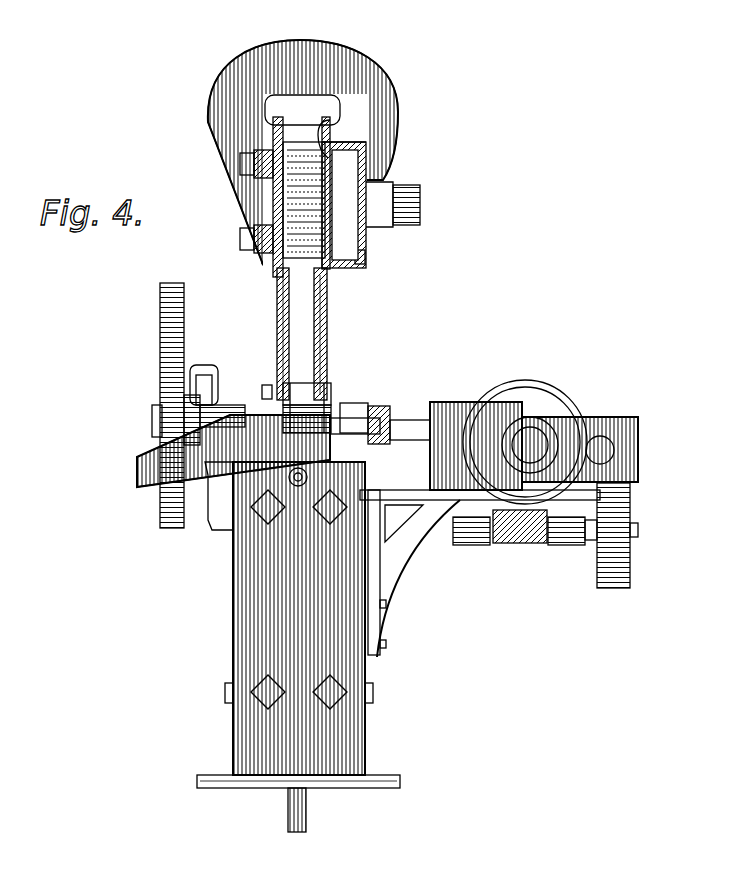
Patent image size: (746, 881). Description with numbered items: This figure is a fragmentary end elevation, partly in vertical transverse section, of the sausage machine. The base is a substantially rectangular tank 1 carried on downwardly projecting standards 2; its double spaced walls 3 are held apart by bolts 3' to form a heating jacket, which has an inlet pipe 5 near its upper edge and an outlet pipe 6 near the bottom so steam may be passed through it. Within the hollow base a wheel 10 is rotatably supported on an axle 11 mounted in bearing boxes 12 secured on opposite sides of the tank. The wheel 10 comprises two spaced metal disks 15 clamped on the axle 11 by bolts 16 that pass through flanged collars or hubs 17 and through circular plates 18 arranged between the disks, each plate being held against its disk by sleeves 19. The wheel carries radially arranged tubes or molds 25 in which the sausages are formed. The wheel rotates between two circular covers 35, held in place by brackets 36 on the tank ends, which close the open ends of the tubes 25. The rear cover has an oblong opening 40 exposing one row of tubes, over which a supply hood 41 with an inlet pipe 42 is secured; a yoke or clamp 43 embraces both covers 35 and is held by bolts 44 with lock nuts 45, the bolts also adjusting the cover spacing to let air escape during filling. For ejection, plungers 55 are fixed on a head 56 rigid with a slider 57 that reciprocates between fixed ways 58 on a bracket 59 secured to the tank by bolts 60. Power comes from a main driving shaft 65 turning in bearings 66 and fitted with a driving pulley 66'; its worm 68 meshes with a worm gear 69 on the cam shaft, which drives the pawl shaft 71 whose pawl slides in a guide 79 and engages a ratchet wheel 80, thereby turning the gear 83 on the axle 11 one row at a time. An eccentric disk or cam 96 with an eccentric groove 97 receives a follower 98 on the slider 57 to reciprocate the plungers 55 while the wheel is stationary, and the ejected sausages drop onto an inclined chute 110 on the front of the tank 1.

The tank 1 is at (212, 632).
The standards 2 is at (398, 777).
The double spaced walls 3 is at (297, 610).
The bolts 3' is at (295, 691).
The inlet pipe 5 is at (302, 484).
The outlet pipe 6 is at (306, 815).
The wheel 10 is at (340, 102).
The axle 11 is at (152, 420).
The bearing boxes 12 is at (232, 412).
The disks 15 is at (282, 270).
The bolts 16 is at (265, 388).
The flanged collars or hubs 17 is at (345, 416).
The circular plates 18 is at (278, 336).
The sleeves 19 is at (312, 388).
The tubes or molds 25 is at (285, 128).
The circular covers 35 is at (275, 140).
The brackets 36 is at (298, 464).
The oblong opening 40 is at (340, 186).
The supply hood 41 is at (345, 132).
The inlet pipe 42 is at (420, 206).
The yoke or clamp 43 is at (325, 68).
The bolts or set screws 44 is at (240, 156).
The lock nuts 45 is at (254, 164).
The plungers 55 is at (380, 404).
The head 56 is at (410, 420).
The slider 57 is at (638, 440).
The fixed ways 58 is at (448, 404).
The bracket 59 is at (380, 560).
The bolts 60 is at (386, 604).
The main driving shaft 65 is at (638, 530).
The bearings 66 is at (519, 547).
The driving pulley 66' is at (635, 535).
The worm 68 is at (512, 544).
The worm gear 69 is at (522, 382).
The pawl shaft 71 is at (415, 522).
The guide 79 is at (200, 372).
The ratchet wheel 80 is at (210, 380).
The gear 83 is at (160, 380).
The eccentric disk or cam 96 is at (560, 430).
The eccentric groove 97 is at (550, 420).
The follower 98 is at (608, 438).
The inclined chute 110 is at (137, 470).